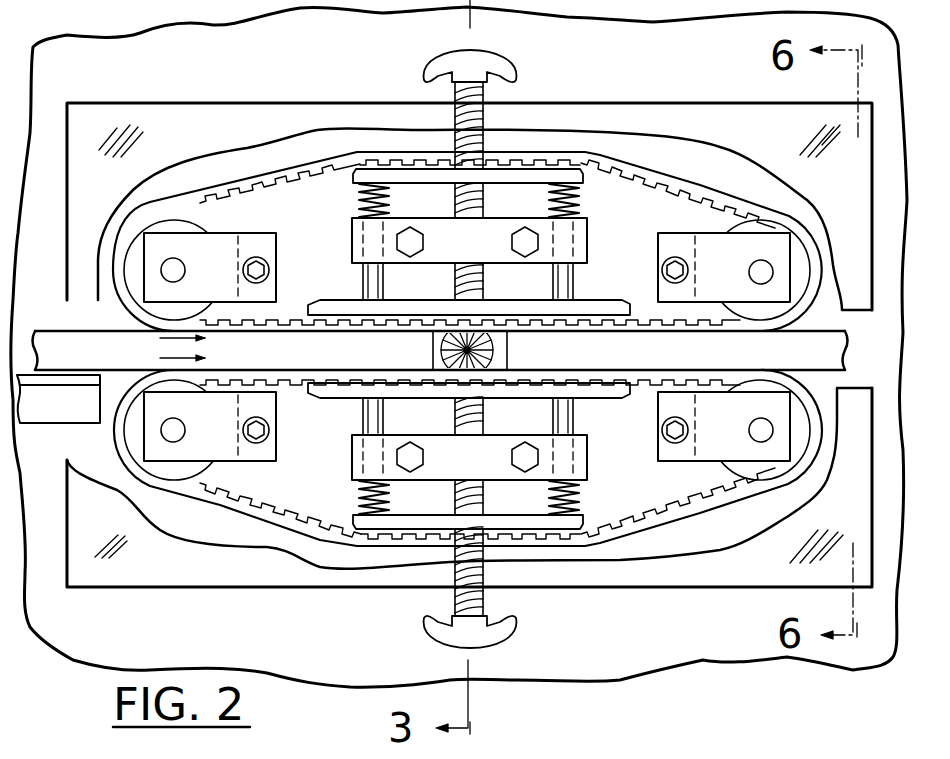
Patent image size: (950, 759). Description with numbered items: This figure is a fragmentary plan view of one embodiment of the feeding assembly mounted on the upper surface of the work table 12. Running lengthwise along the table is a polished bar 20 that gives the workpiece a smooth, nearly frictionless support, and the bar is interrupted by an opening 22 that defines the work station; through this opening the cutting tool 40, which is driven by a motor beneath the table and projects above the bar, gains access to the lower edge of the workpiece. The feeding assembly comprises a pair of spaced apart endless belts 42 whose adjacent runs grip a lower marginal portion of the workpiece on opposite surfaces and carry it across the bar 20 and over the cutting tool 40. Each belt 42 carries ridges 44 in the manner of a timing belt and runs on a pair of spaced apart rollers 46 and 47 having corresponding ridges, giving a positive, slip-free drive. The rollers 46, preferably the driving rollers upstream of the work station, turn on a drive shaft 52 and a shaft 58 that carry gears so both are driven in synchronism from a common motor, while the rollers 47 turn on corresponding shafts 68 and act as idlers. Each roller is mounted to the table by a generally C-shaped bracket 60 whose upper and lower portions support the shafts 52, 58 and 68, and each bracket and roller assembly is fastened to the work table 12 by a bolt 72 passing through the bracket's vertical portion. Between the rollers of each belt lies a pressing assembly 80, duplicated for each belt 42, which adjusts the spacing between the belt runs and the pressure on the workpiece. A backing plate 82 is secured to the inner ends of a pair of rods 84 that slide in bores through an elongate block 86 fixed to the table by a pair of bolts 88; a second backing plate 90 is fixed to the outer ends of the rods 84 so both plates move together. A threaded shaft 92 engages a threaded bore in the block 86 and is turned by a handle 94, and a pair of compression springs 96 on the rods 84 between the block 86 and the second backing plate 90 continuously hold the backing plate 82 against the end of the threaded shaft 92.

The work table 12 is at (280, 641).
The bar 20 is at (690, 366).
The opening 22 is at (503, 348).
The cutting tool 40 is at (433, 348).
The endless belts 42 is at (247, 178).
The ridges 44 is at (247, 200).
The rollers 46 is at (168, 227).
The rollers 47 is at (763, 233).
The drive shaft 52 is at (163, 278).
The shaft 58 is at (164, 439).
The C-shaped brackets 60 is at (221, 274).
The shafts 68 is at (765, 419).
The bolt 72 is at (265, 263).
The pressing assembly 80 is at (542, 349).
The backing plate 82 is at (425, 300).
The rods 84 is at (362, 278).
The elongate block 86 is at (484, 251).
The bolts 88 is at (415, 229).
The second backing plate 90 is at (353, 170).
The threaded shaft 92 is at (457, 113).
The handle 94 is at (503, 50).
The compression springs 96 is at (580, 196).